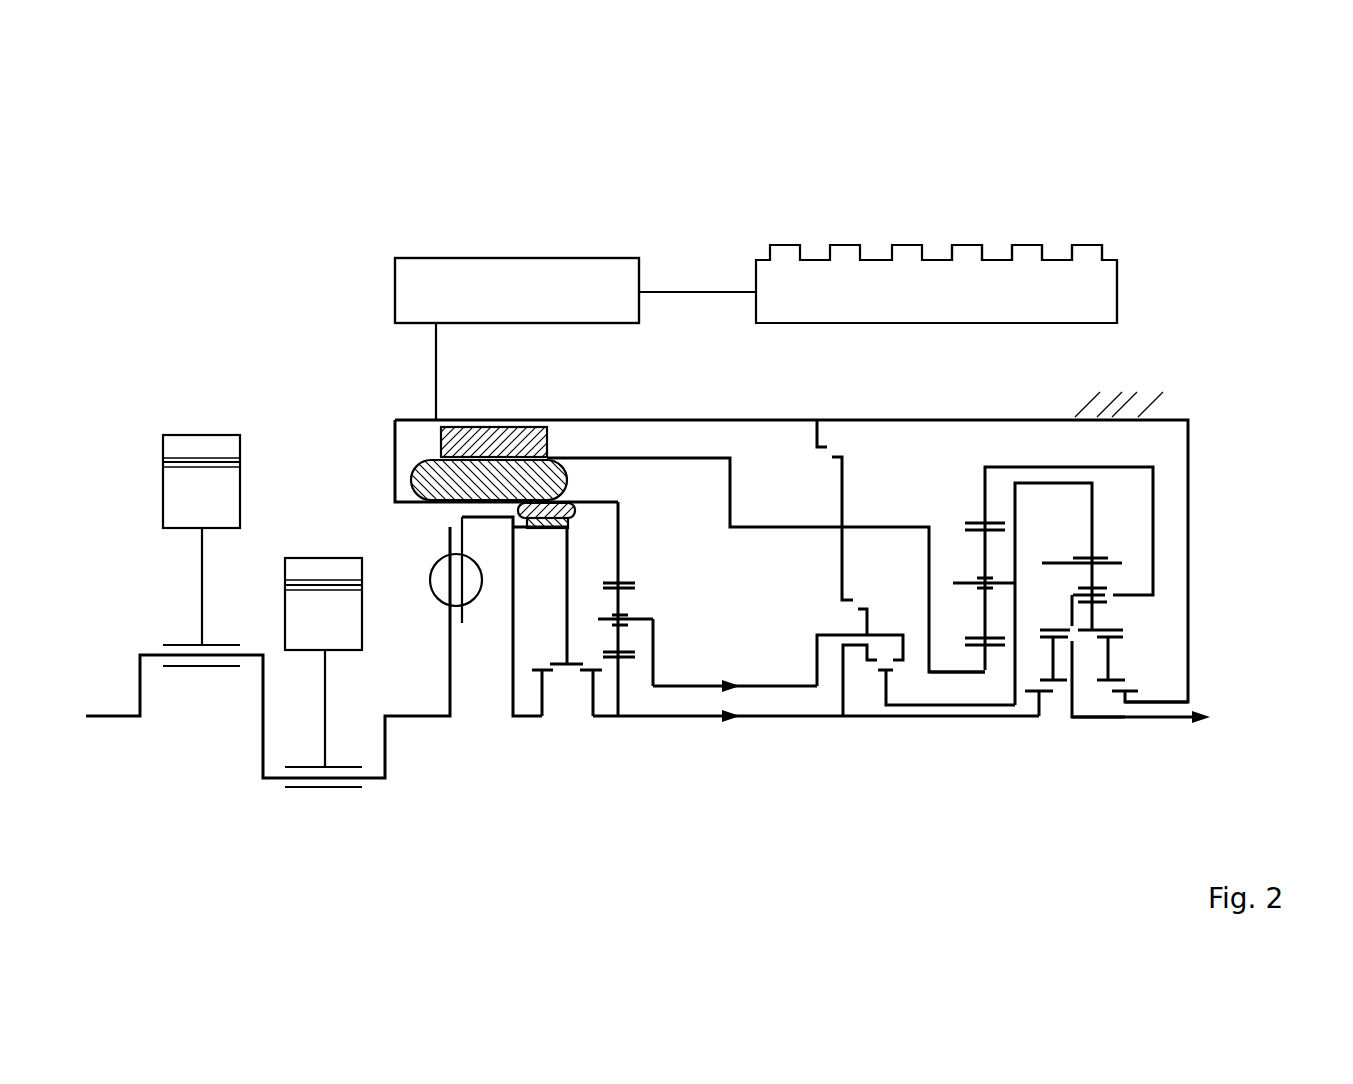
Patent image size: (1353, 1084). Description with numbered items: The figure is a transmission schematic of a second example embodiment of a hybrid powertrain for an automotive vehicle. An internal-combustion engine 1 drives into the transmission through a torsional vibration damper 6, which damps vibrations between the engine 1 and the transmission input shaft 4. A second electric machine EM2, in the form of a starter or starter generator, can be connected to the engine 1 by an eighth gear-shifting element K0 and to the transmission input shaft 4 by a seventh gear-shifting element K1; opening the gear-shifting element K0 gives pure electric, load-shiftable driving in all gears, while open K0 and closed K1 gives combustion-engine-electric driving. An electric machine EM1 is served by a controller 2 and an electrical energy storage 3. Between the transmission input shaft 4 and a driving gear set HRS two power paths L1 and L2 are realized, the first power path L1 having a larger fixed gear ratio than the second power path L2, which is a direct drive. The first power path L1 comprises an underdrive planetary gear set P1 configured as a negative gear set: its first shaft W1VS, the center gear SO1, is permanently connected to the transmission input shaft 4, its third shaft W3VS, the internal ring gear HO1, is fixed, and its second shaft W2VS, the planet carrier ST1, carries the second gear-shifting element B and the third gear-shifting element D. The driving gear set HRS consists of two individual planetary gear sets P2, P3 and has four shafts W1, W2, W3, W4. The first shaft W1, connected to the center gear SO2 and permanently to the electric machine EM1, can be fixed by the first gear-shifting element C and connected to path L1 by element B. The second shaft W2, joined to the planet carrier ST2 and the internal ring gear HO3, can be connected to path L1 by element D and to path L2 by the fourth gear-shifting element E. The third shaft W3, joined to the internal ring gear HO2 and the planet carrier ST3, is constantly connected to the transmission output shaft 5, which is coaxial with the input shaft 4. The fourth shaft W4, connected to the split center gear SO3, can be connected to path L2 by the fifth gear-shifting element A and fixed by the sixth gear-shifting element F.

The internal-combustion engine 1 is at (198, 390).
The controller 2 is at (455, 293).
The electrical energy storage 3 is at (1075, 292).
The transmission input shaft 4 is at (512, 617).
The transmission output shaft 5 is at (1163, 718).
The torsional vibration damper 6 is at (433, 568).
The electric machine EM1 is at (431, 443).
The second electric machine EM2 is at (578, 486).
The underdrive planetary gear set P1 is at (618, 240).
The first individual planetary gear set P2 is at (985, 225).
The second individual planetary gear set P3 is at (1092, 225).
The driving gear set HRS is at (1127, 143).
The eighth gear-shifting element K0 is at (548, 672).
The seventh gear-shifting element K1 is at (587, 672).
The first shaft of the underdrive planetary gear set W1VS is at (620, 690).
The second shaft of the underdrive planetary gear set W2VS is at (645, 650).
The third shaft of the underdrive planetary gear set W3VS is at (623, 583).
The internal ring gear HO1 is at (635, 618).
The center gear SO1 is at (625, 655).
The planet carrier ST1 is at (728, 472).
The internal ring gear HO2 is at (993, 530).
The center gear SO2 is at (993, 650).
The planet carrier ST2 is at (1000, 583).
The internal ring gear HO3 is at (1098, 558).
The center gear SO3 is at (1063, 640).
The planet carrier ST3 is at (1115, 593).
The first shaft W1 is at (962, 673).
The second shaft W2 is at (1005, 706).
The third shaft W3 is at (1153, 480).
The fourth shaft W4 is at (1110, 655).
The fifth gear-shifting element A is at (1043, 693).
The second gear-shifting element B is at (862, 612).
The first gear-shifting element C is at (824, 444).
The third gear-shifting element D is at (898, 663).
The fourth gear-shifting element E is at (875, 663).
The sixth gear-shifting element F is at (1122, 718).
The first power path L1 is at (735, 674).
The second power path L2 is at (816, 704).